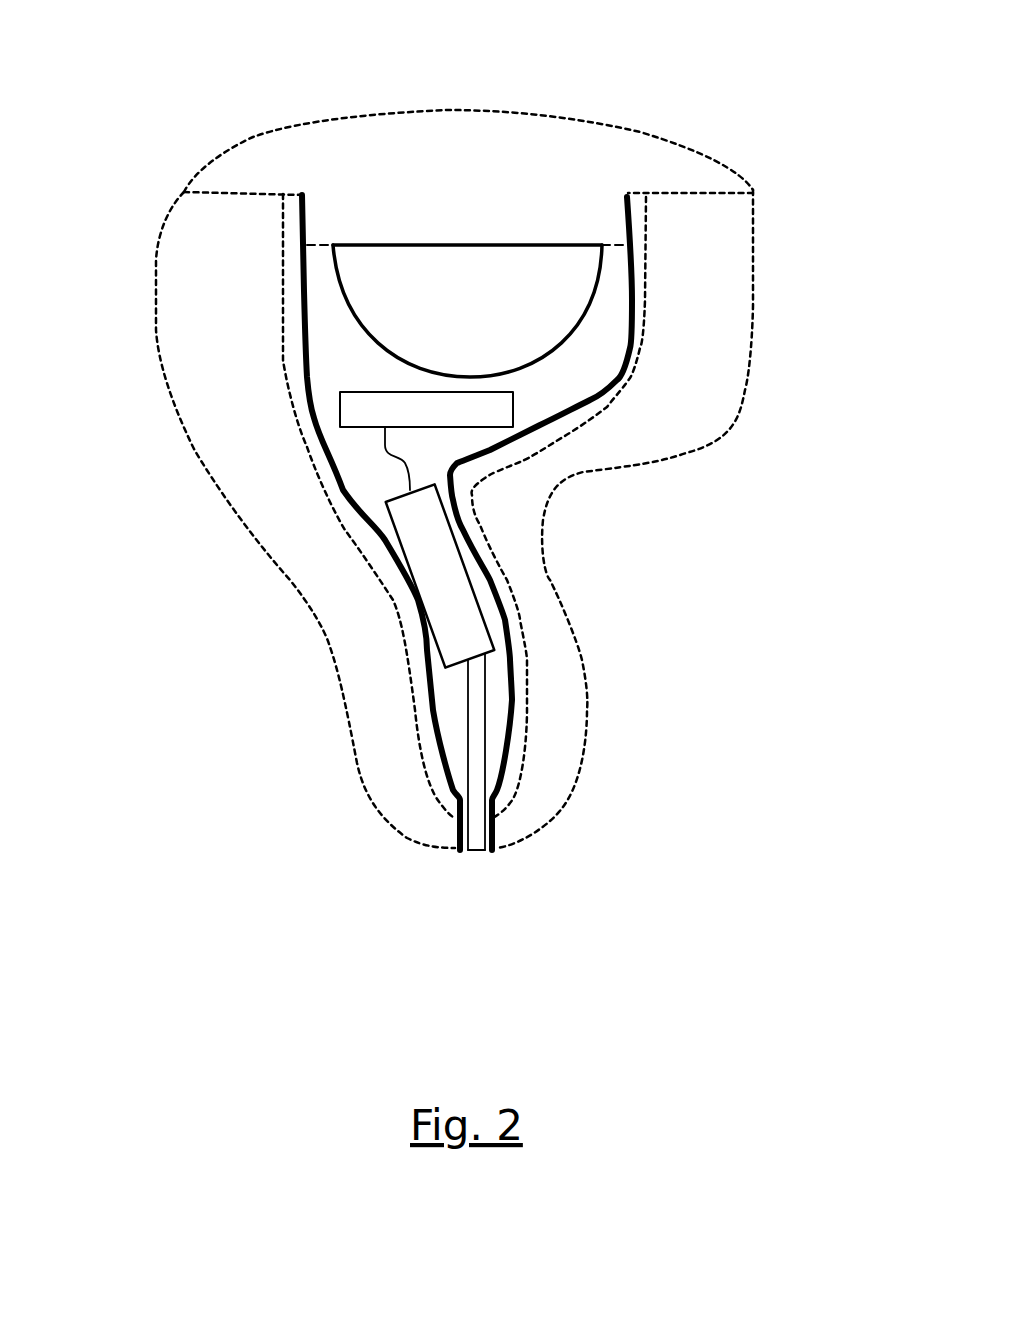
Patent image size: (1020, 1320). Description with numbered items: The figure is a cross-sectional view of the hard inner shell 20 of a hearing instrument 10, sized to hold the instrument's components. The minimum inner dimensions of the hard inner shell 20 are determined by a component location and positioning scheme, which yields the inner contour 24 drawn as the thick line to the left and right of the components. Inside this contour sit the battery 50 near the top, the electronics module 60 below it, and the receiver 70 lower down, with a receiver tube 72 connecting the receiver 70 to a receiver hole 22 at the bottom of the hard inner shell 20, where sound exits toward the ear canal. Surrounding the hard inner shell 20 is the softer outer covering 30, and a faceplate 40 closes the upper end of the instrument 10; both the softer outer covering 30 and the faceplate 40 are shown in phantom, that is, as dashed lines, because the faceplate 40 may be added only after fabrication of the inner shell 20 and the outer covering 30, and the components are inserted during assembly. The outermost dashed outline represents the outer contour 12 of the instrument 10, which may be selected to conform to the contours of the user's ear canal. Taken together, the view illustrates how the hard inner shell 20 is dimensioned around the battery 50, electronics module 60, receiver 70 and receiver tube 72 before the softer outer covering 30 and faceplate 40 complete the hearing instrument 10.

The hearing instrument 10 is at (693, 827).
The outer contour 12 is at (156, 293).
The hard inner shell 20 is at (297, 387).
The receiver hole 22 is at (477, 868).
The inner contour 24 is at (309, 218).
The softer outer covering 30 is at (353, 624).
The faceplate 40 is at (321, 165).
The battery 50 is at (555, 305).
The electronics module 60 is at (513, 408).
The receiver 70 is at (467, 593).
The receiver tube 72 is at (477, 702).